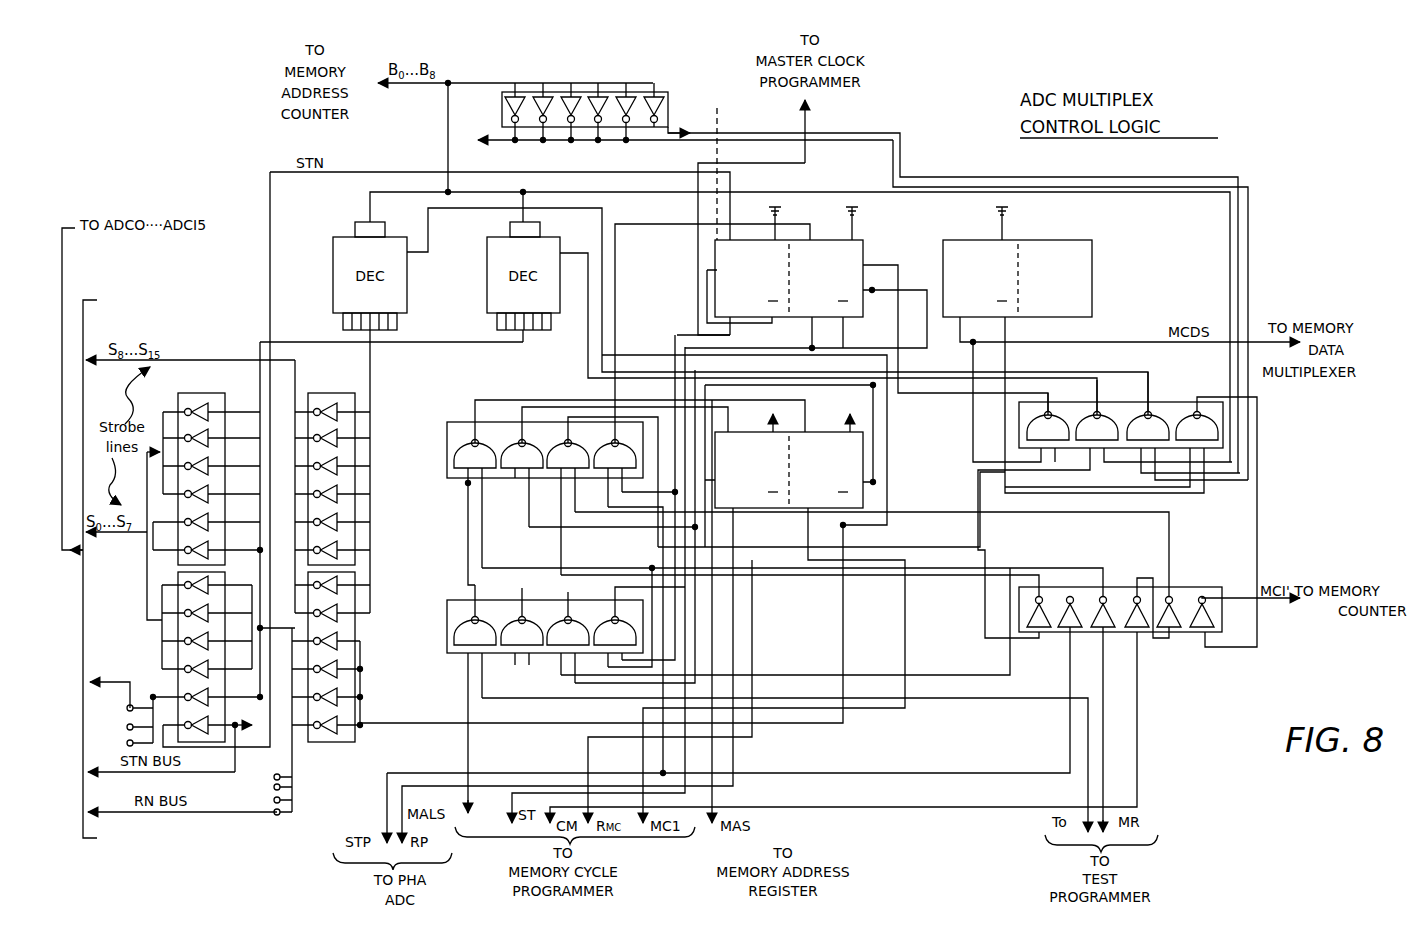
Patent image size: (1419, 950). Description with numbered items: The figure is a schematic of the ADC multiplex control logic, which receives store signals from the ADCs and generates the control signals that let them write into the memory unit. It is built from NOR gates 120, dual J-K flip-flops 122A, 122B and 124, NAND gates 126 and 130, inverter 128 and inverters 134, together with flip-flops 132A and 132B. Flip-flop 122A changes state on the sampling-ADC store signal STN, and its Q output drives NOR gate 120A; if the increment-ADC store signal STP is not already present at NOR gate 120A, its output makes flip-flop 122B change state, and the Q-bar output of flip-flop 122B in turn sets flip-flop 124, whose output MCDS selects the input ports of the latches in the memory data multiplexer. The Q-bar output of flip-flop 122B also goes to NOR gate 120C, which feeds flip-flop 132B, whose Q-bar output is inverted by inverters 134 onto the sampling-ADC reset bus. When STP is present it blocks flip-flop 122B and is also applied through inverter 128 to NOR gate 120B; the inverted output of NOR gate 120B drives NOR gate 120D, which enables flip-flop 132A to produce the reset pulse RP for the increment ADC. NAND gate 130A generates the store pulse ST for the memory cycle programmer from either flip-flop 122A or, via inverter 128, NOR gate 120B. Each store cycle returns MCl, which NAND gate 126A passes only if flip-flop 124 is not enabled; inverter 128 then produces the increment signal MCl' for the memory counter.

The NOR gates 120 is at (457, 425).
The NOR gate 120A is at (609, 457).
The NOR gate 120B is at (562, 457).
The NOR gate 120C is at (514, 457).
The NOR gate 120D is at (462, 466).
The flip-flop 122A is at (755, 243).
The flip-flop 122B is at (888, 236).
The flip-flop 124 is at (975, 243).
The NAND gates 126 is at (1170, 408).
The NAND gate 126A is at (1207, 432).
The inverter 128 is at (1189, 596).
The NAND gates 130 is at (457, 606).
The NAND gate 130A is at (609, 637).
The flip-flop 132A is at (750, 500).
The flip-flop 132B is at (831, 432).
The inverters 134 is at (325, 742).